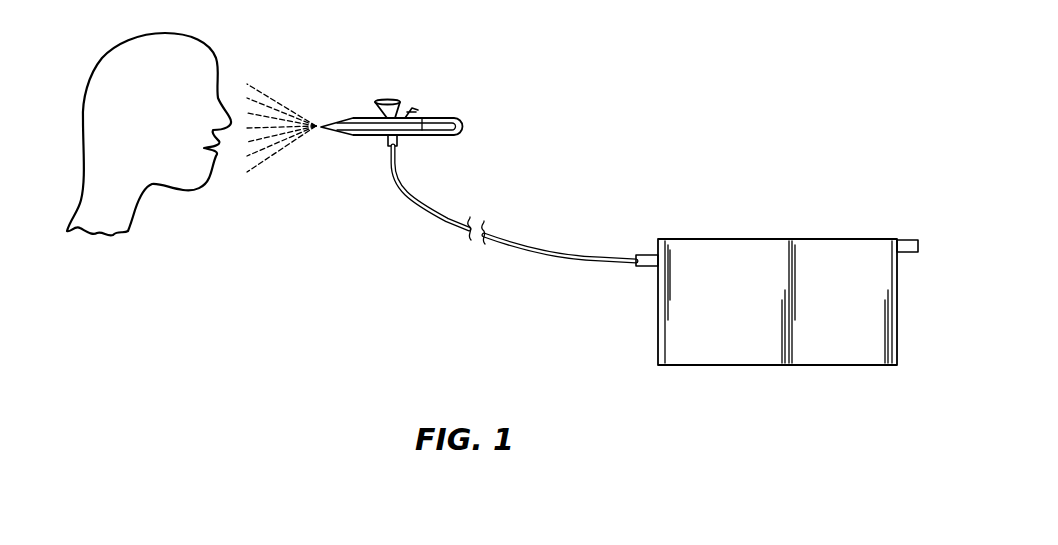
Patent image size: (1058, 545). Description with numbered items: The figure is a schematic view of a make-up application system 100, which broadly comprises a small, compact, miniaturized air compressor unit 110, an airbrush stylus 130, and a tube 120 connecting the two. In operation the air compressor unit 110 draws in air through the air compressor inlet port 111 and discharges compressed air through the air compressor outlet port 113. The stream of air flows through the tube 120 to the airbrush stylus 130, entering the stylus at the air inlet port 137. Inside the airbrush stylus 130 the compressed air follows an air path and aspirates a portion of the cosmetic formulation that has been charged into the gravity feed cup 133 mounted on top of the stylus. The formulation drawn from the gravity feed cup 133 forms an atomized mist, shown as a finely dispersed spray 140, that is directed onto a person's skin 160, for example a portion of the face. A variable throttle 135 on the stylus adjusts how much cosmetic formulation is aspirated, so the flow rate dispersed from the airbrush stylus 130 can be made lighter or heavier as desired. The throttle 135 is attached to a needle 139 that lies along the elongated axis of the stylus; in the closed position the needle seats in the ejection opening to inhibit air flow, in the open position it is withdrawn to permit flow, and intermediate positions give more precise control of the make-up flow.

The make-up application system 100 is at (747, 132).
The air compressor unit 110 is at (867, 367).
The air compressor inlet port 111 is at (900, 240).
The air compressor outlet port 113 is at (646, 253).
The tube 120 is at (537, 252).
The airbrush stylus 130 is at (443, 137).
The gravity feed cup 133 is at (383, 100).
The variable throttle 135 is at (417, 107).
The air inlet port 137 is at (384, 143).
The needle 139 is at (418, 125).
The spray 140 is at (287, 152).
The person's skin 160 is at (147, 197).